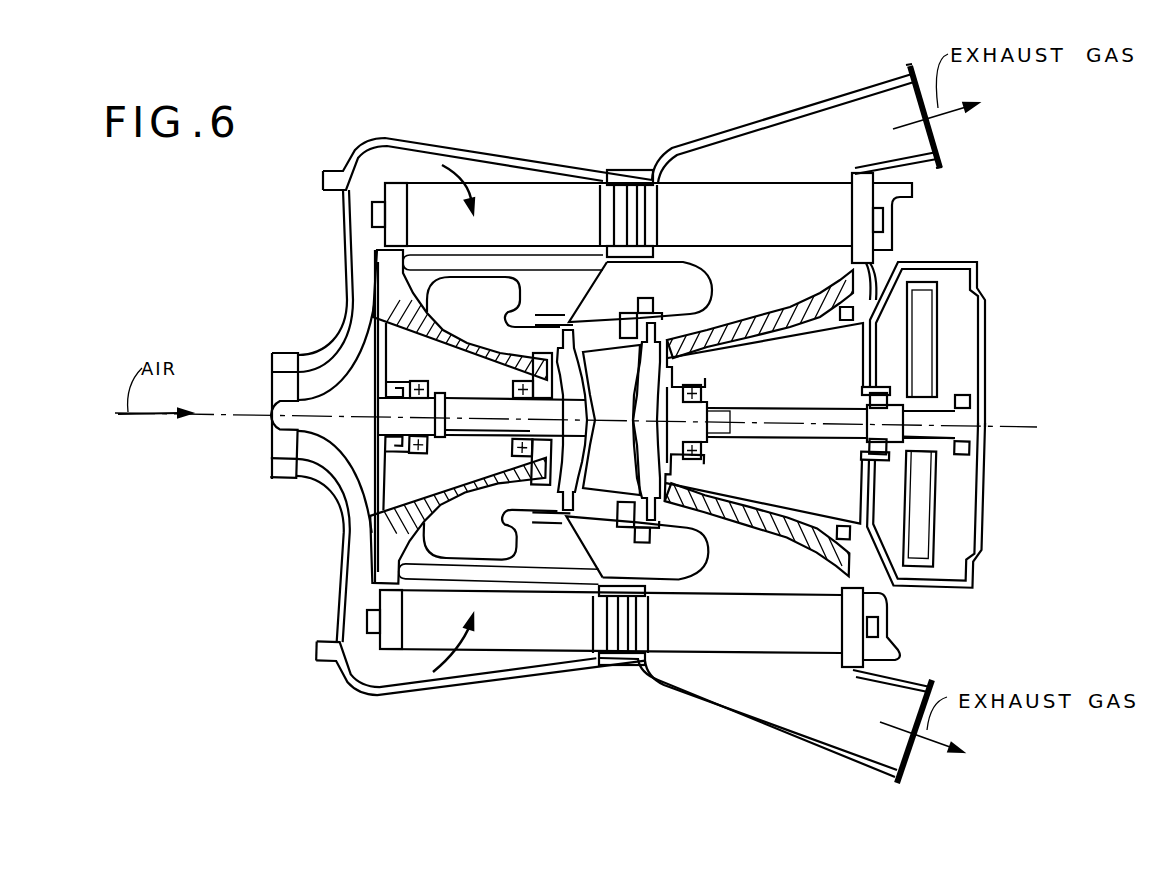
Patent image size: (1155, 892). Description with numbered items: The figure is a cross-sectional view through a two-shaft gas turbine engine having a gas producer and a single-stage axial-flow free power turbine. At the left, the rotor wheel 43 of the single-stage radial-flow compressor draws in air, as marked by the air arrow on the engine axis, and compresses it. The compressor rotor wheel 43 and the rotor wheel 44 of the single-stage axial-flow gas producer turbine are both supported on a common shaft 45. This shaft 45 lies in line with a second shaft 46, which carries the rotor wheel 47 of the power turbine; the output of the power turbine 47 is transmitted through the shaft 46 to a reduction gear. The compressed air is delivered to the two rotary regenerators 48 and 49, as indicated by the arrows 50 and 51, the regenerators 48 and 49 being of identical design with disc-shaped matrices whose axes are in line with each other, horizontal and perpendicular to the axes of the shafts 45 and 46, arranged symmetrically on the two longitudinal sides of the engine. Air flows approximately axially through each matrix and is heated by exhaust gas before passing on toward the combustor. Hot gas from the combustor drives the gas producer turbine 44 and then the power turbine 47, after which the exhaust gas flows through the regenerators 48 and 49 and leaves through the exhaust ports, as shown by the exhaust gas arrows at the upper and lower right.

The rotor wheel of the radial-flow compressor 43 is at (333, 457).
The rotor wheel of the gas producer turbine 44 is at (568, 397).
The common shaft 45 is at (487, 426).
The shaft 46 is at (803, 428).
The rotor wheel of the power turbine 47 is at (655, 395).
The rotary regenerator 48 is at (551, 198).
The rotary regenerator 49 is at (762, 638).
The arrow 50 is at (461, 172).
The arrow 51 is at (460, 657).